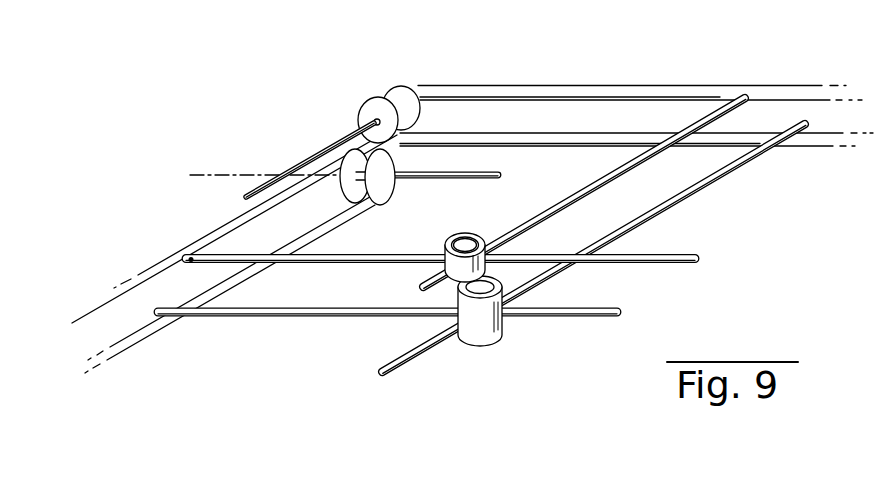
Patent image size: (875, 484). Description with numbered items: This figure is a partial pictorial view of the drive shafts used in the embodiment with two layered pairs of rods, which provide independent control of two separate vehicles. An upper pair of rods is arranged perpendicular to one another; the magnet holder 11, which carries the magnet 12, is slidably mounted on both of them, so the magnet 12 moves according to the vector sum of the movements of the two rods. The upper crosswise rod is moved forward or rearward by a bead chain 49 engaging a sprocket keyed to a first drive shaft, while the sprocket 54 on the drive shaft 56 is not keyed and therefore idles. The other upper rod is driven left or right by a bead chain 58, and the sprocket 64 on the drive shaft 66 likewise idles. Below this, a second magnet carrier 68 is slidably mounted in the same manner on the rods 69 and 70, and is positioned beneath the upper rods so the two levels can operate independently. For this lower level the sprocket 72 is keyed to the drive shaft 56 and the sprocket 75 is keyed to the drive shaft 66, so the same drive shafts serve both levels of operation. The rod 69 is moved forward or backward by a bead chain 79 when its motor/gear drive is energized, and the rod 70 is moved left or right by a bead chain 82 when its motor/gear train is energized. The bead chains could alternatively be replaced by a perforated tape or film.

The sprocket 75 is at (397, 90).
The sprocket 64 is at (360, 110).
The drive shaft 66 is at (326, 147).
The bead chain 58 is at (520, 100).
The bead chain 82 is at (582, 86).
The sprocket 72 is at (353, 188).
The sprocket 54 is at (388, 190).
The drive shaft 56 is at (443, 180).
The magnet 12 is at (471, 242).
The magnet holder 11 is at (446, 241).
The rod 70 is at (700, 184).
The bead chain 79 is at (165, 253).
The bead chain 49 is at (107, 302).
The magnet carrier 68 is at (485, 344).
The rod 69 is at (578, 317).